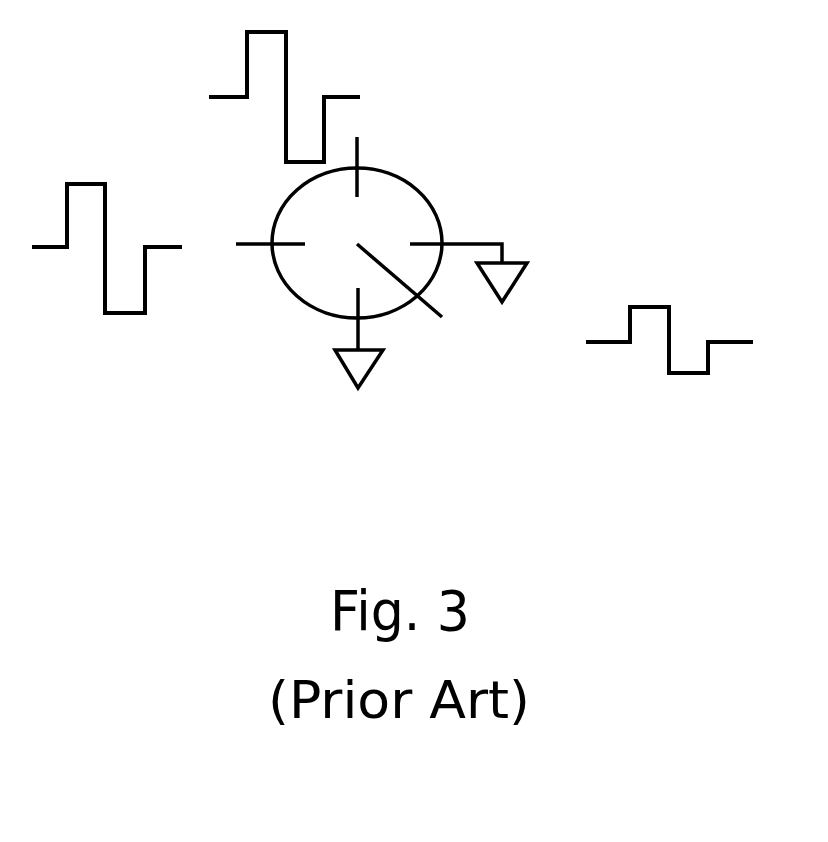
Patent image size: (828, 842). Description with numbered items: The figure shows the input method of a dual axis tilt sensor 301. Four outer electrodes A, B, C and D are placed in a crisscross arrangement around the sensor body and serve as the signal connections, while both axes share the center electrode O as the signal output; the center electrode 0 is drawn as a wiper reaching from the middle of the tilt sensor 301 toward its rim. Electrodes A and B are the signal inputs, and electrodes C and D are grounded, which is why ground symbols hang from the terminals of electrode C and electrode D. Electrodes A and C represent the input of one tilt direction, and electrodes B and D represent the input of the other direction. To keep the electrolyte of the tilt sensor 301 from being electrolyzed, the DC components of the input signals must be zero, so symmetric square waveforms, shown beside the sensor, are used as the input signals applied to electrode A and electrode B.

The tilt sensor 301 is at (400, 197).
The center electrode 0 is at (410, 299).
The electrode A is at (251, 229).
The electrode B is at (385, 162).
The electrode C is at (477, 254).
The electrode D is at (335, 338).